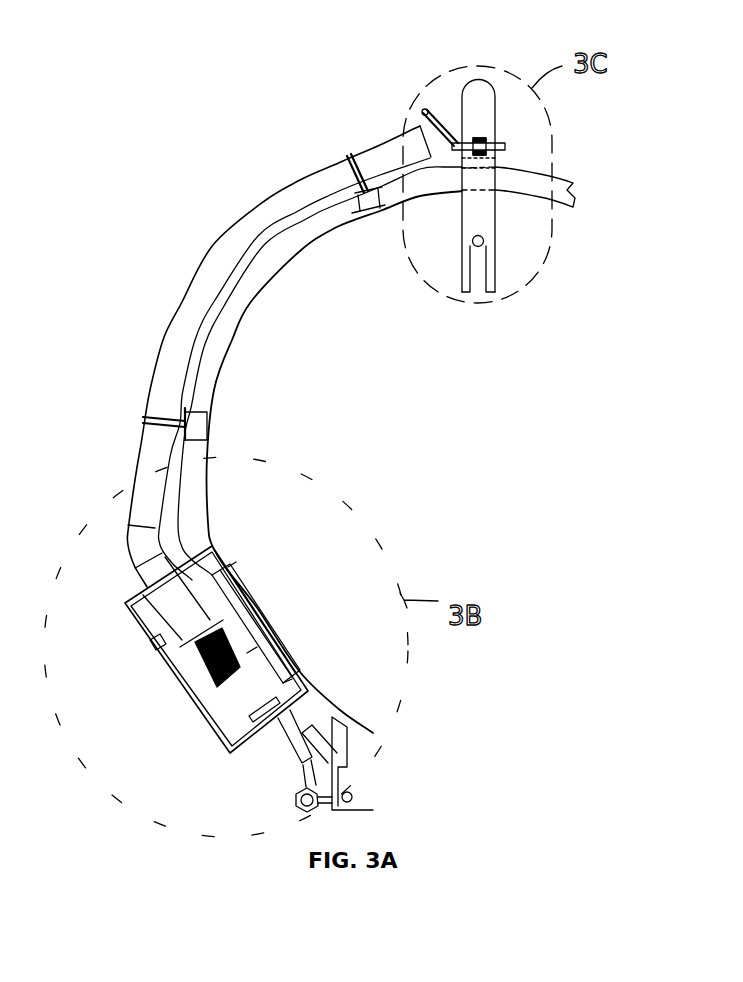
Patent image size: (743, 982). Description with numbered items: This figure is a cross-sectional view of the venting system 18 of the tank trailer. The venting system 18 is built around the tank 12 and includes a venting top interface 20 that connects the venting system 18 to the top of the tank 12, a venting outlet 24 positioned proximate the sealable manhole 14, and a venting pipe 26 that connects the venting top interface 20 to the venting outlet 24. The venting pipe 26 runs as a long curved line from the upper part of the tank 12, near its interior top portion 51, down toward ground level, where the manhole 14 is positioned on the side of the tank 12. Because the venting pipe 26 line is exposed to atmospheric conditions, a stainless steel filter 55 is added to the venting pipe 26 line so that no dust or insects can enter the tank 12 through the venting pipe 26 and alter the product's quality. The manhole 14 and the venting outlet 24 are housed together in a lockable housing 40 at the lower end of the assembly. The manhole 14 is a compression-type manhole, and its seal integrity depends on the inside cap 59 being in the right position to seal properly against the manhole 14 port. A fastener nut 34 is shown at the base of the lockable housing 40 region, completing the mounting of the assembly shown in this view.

The tank 12 is at (243, 302).
The sealable manhole 14 is at (260, 613).
The venting system 18 is at (158, 276).
The venting top interface 20 is at (506, 160).
The venting outlet 24 is at (213, 674).
The venting pipe 26 is at (168, 375).
The fastener nut 34 is at (298, 803).
The lockable housing 40 is at (140, 622).
The interior top portion 51 is at (543, 288).
The stainless steel filter 55 is at (187, 660).
The inside cap 59 is at (230, 565).